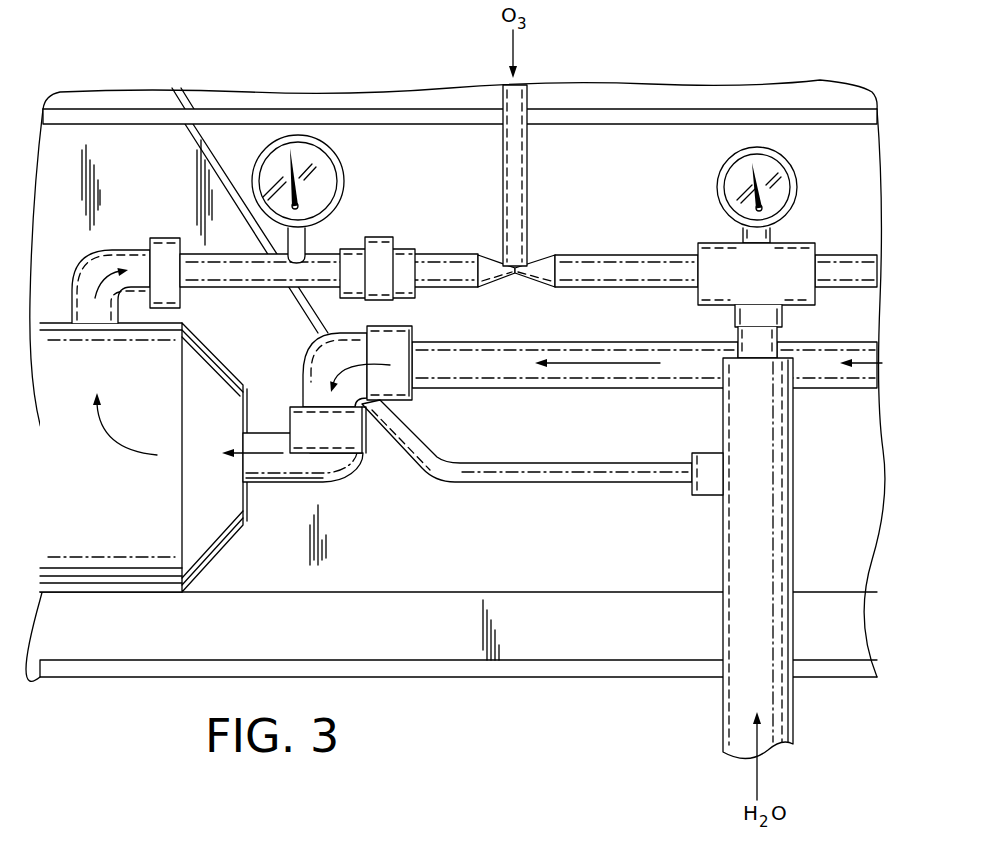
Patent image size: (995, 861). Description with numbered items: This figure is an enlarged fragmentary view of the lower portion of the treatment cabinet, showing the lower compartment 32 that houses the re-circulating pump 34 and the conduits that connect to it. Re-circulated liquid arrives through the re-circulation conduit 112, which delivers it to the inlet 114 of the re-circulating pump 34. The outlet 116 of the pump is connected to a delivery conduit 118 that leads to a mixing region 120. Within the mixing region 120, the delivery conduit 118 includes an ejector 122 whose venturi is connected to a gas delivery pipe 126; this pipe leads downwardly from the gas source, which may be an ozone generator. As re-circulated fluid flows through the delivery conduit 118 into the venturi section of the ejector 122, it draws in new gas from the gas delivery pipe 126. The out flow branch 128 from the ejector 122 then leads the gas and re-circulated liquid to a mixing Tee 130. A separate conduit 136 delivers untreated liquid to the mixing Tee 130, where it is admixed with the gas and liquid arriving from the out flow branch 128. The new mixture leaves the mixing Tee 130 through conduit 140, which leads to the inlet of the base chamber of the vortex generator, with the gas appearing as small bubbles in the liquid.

The lower compartment 32 is at (446, 564).
The re-circulating pump 34 is at (117, 563).
The re-circulation conduit 112 is at (520, 368).
The inlet 114 is at (268, 465).
The outlet 116 is at (100, 258).
The delivery conduit 118 is at (322, 264).
The mixing region 120 is at (660, 148).
The ejector 122 is at (502, 296).
The gas delivery pipe 126 is at (510, 178).
The out flow branch 128 is at (642, 262).
The mixing Tee 130 is at (718, 243).
The conduit 136 is at (735, 520).
The conduit 140 is at (850, 262).